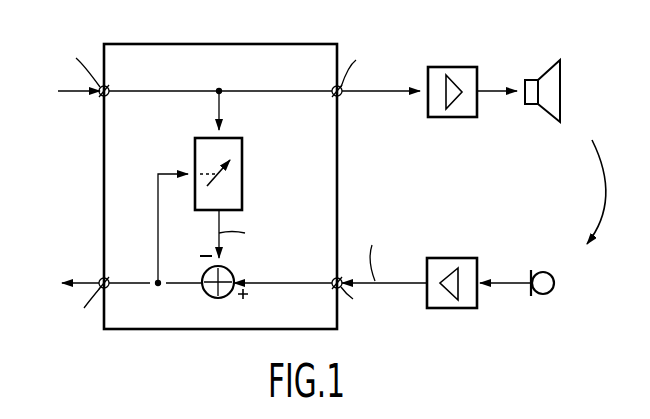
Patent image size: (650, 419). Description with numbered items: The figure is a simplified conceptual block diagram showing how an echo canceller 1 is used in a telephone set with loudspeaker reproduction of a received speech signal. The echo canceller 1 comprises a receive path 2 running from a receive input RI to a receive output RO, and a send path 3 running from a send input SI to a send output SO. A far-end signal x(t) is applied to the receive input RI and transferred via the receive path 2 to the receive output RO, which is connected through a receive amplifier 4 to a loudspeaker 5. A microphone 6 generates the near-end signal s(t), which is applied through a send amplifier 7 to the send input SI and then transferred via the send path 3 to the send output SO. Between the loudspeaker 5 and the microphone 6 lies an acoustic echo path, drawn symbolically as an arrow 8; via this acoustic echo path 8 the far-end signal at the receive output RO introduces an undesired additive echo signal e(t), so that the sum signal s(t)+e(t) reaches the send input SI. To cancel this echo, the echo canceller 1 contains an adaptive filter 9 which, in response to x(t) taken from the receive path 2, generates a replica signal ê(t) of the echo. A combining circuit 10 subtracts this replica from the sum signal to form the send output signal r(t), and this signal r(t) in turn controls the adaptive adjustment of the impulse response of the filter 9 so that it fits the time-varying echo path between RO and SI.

The echo canceller 1 is at (231, 44).
The receive path 2 is at (183, 91).
The send path 3 is at (280, 284).
The receive amplifier 4 is at (446, 67).
The loudspeaker 5 is at (530, 80).
The microphone 6 is at (531, 297).
The send amplifier 7 is at (445, 309).
The acoustic echo path 8 is at (606, 200).
The adaptive filter 9 is at (243, 174).
The combining circuit 10 is at (203, 292).